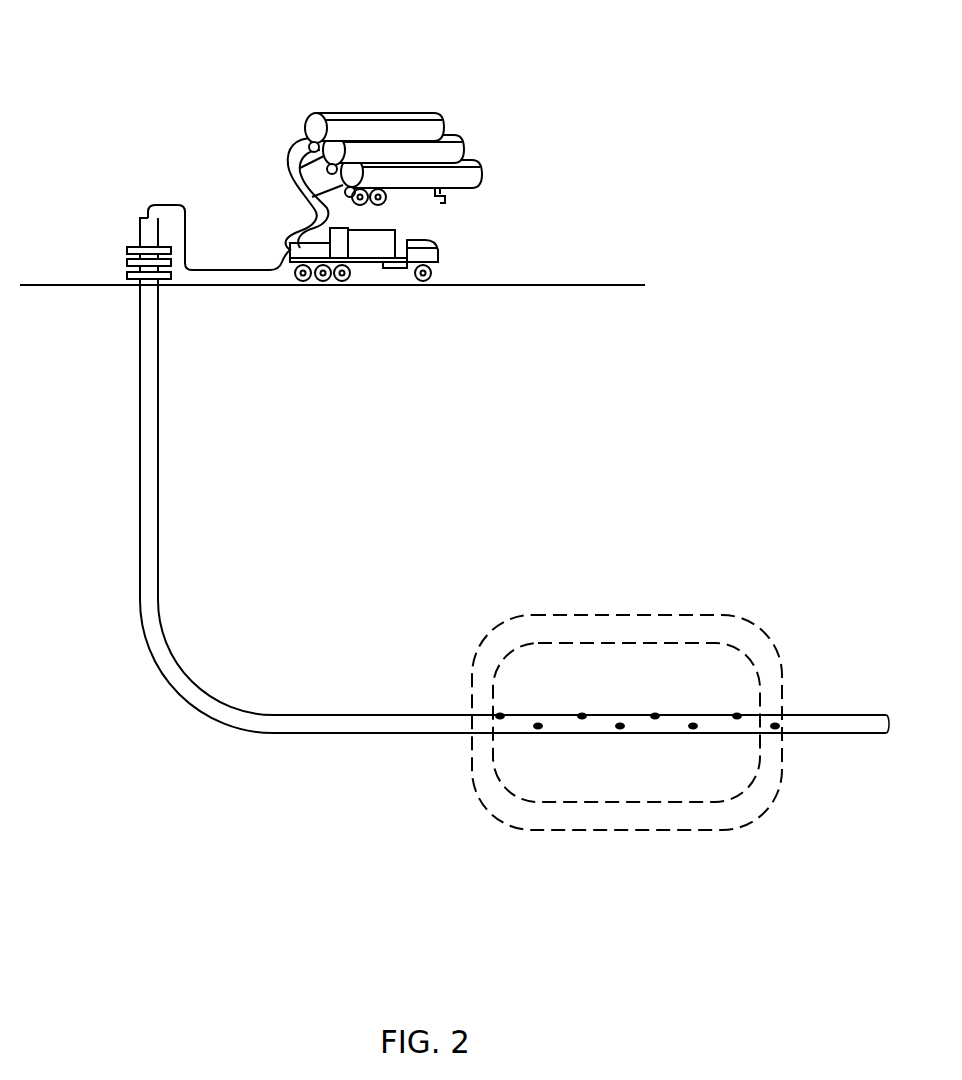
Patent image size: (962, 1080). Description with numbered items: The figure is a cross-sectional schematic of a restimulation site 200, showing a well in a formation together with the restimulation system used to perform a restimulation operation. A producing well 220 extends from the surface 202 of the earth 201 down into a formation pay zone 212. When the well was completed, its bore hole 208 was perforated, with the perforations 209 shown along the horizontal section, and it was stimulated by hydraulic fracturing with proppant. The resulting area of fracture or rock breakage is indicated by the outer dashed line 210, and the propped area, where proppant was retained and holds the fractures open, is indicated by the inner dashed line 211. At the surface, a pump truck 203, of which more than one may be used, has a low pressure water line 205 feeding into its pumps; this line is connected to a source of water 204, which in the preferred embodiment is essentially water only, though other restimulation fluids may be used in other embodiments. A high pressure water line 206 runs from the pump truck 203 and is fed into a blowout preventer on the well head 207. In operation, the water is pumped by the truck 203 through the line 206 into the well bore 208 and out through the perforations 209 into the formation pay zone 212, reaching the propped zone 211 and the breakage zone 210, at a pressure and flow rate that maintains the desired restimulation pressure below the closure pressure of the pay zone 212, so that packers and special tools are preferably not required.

The restimulation site 200 is at (646, 58).
The earth 201 is at (408, 391).
The surface 202 is at (590, 285).
The pump truck 203 is at (433, 250).
The source of water 204 is at (463, 130).
The low pressure water line 205 is at (292, 200).
The high pressure water line 206 is at (165, 206).
The well head 207 is at (121, 261).
The bore hole 208 is at (158, 437).
The perforations 209 is at (773, 724).
The area of fracture or rock breakage 210 is at (677, 613).
The propped area 211 is at (742, 655).
The formation pay zone 212 is at (456, 820).
The producing well 220 is at (124, 217).